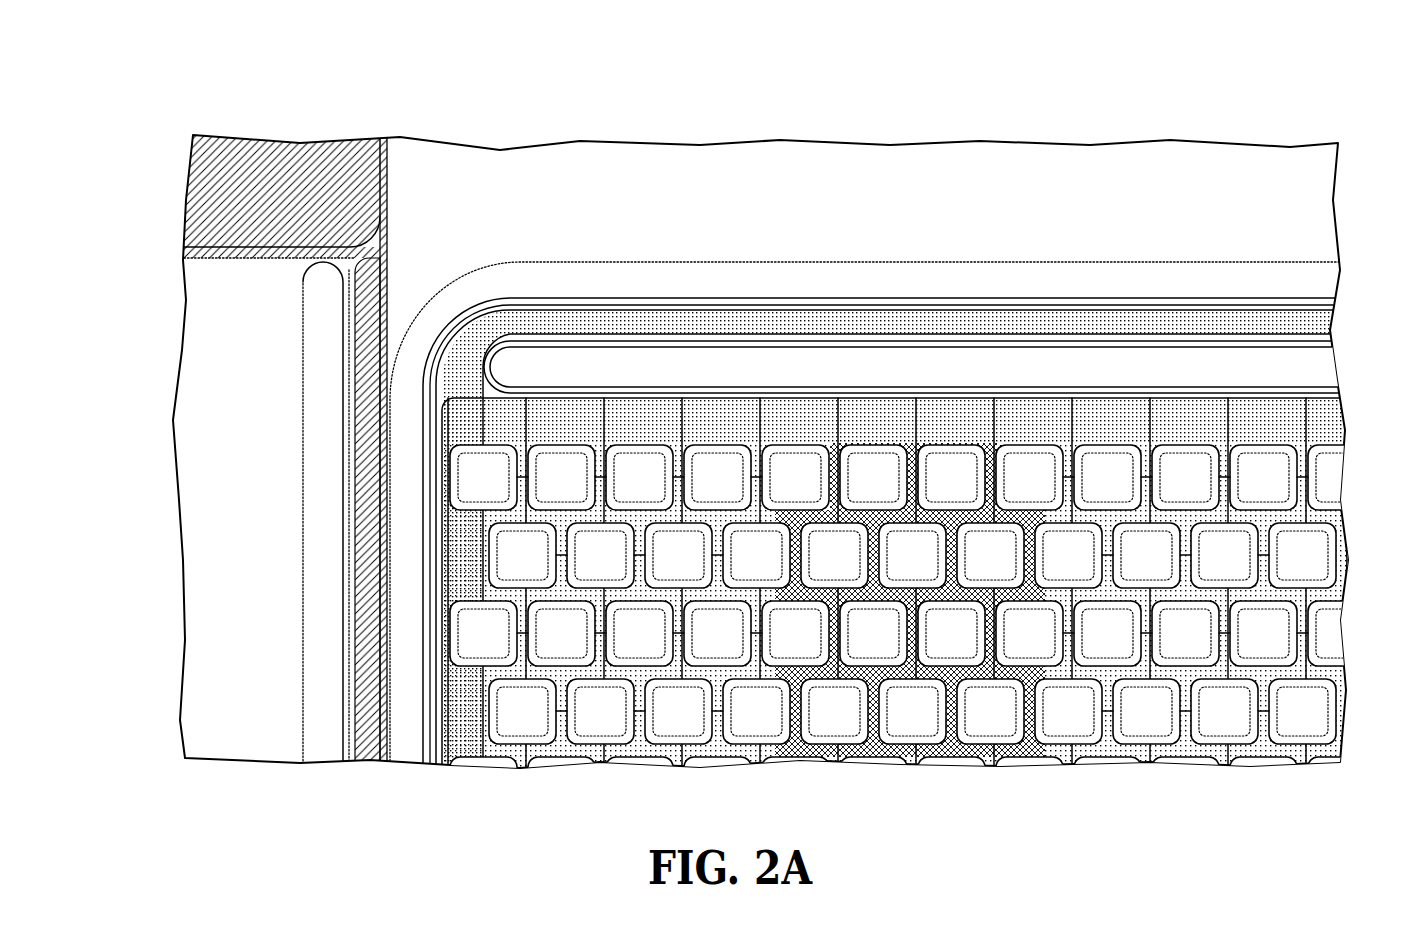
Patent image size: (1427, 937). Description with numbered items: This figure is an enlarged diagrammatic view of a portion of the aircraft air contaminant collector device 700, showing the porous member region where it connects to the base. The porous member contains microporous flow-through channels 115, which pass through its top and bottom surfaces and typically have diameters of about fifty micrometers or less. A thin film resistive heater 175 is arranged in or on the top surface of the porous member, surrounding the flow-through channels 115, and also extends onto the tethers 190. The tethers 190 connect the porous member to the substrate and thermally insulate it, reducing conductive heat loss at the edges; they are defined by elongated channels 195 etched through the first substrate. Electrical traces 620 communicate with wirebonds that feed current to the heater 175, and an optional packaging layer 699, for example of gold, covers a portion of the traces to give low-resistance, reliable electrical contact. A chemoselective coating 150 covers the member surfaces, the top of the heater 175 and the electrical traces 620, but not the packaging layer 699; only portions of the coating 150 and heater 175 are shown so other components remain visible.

The aircraft air contaminant collector device 700 is at (272, 861).
The packaging layer 699 is at (300, 183).
The electrical traces 620 is at (233, 365).
The thin film resistive heater 175 is at (952, 718).
The tethers 190 is at (750, 320).
The channels 195 is at (1312, 370).
The chemoselective coating 150 is at (535, 473).
The microporous flow-through channels 115 is at (1255, 630).